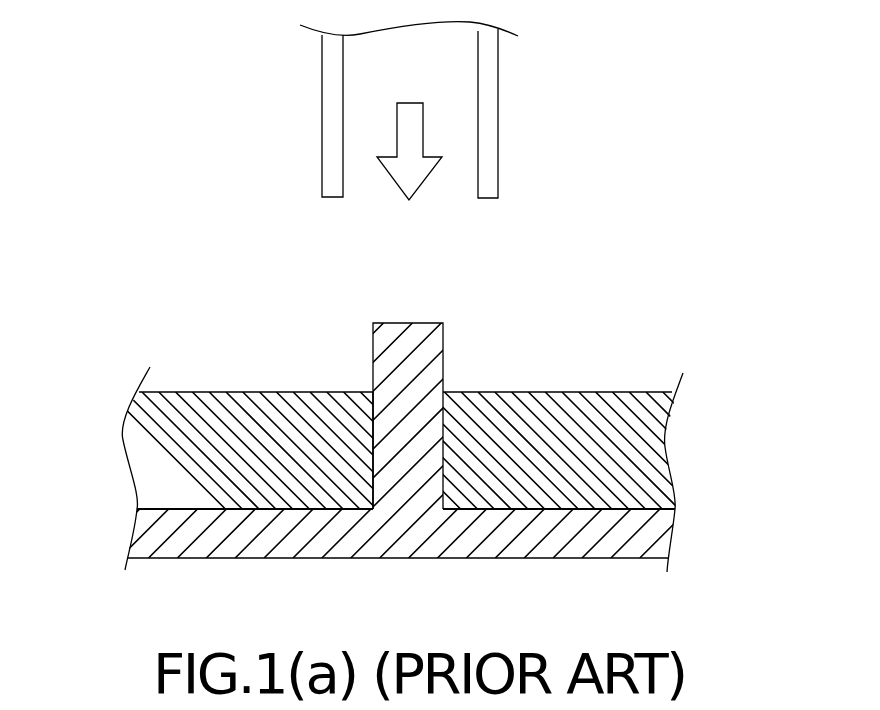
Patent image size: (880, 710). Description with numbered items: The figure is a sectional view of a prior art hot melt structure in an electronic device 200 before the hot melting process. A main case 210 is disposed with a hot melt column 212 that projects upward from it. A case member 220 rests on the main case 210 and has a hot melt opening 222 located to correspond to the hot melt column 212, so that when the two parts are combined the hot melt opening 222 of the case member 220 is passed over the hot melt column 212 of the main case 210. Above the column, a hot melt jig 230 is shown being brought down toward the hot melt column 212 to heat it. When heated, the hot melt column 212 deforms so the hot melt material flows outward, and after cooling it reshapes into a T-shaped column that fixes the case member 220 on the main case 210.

The electronic device 200 is at (590, 275).
The main case 210 is at (184, 537).
The hot melt column 212 is at (420, 337).
The case member 220 is at (610, 451).
The hot melt opening 222 is at (358, 391).
The hot melt jig 230 is at (485, 112).